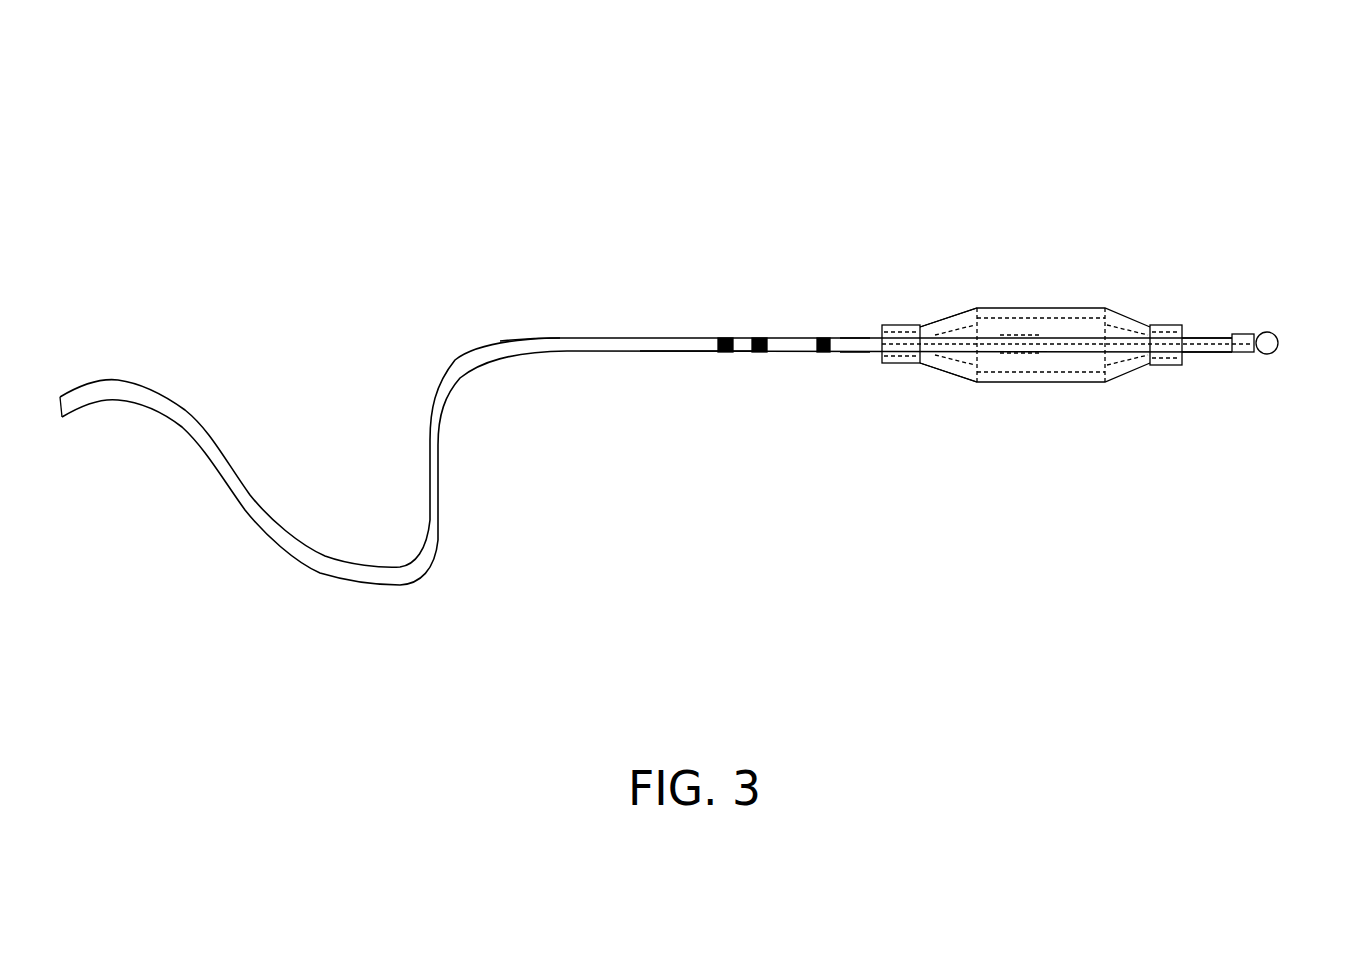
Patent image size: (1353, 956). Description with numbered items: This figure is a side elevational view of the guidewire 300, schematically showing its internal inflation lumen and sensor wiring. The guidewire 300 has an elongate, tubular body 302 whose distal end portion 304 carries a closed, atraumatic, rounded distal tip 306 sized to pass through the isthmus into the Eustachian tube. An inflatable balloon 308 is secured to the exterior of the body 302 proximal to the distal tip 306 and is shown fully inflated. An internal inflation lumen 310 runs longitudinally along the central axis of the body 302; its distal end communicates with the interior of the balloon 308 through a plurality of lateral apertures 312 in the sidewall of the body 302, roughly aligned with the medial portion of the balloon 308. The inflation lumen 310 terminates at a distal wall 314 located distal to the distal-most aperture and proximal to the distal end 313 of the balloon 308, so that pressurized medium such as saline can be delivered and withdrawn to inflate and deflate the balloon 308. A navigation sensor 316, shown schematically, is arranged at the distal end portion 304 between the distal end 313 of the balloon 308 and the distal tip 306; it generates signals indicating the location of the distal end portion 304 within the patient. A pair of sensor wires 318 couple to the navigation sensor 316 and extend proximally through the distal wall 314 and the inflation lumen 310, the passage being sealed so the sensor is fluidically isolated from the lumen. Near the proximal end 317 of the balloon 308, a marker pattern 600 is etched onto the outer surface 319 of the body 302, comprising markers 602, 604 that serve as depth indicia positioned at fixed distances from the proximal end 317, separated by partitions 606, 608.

The guidewire 300 is at (561, 125).
The tubular body 302 is at (648, 337).
The distal end portion 304 is at (1257, 302).
The distal tip 306 is at (1273, 333).
The inflatable balloon 308 is at (958, 313).
The inflation lumen 310 is at (700, 353).
The apertures 312 is at (1020, 362).
The distal end of balloon 313 is at (1180, 370).
The distal wall 314 is at (1058, 334).
The navigation sensor 316 is at (1237, 353).
The proximal end of balloon 317 is at (883, 362).
The sensor wires 318 is at (1212, 327).
The outer surface 319 is at (552, 338).
The marker pattern 600 is at (750, 296).
The marker 602 is at (823, 353).
The marker 604 is at (727, 337).
The partition 606 is at (863, 338).
The partition 608 is at (793, 335).